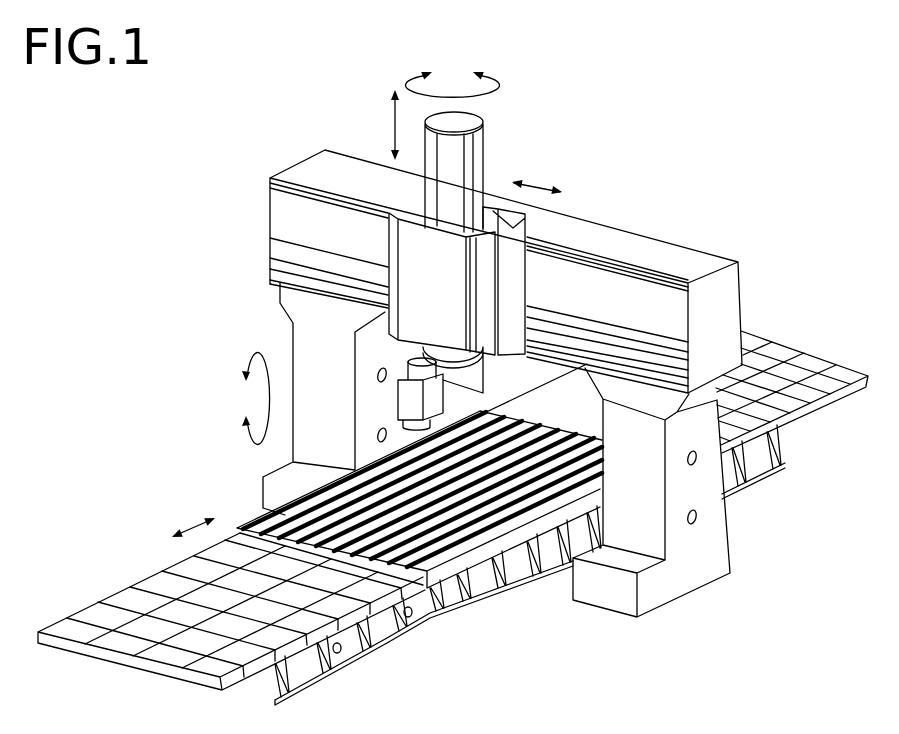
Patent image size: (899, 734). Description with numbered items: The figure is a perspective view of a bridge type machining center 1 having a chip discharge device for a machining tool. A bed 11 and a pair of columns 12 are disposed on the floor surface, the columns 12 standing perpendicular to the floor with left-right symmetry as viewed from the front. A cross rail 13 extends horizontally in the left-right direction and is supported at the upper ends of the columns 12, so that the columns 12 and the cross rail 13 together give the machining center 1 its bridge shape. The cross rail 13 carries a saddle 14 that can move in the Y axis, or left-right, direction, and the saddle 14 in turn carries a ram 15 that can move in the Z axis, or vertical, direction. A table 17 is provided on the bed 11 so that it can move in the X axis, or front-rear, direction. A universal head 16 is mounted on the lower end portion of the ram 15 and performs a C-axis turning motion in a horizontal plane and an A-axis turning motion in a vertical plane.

The bridge type machining center 1 is at (330, 121).
The bed 11 is at (377, 648).
The column 12 is at (310, 343).
The cross rail 13 is at (697, 262).
The saddle 14 is at (392, 244).
The ram 15 is at (478, 152).
The universal head 16 is at (388, 402).
The table 17 is at (260, 512).